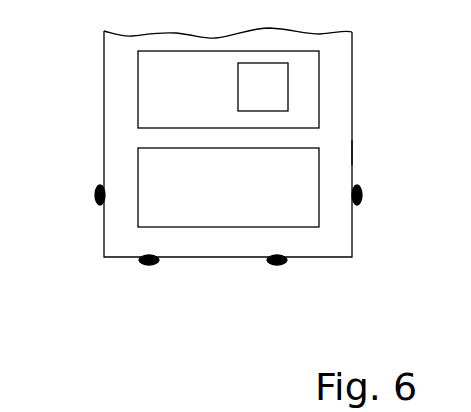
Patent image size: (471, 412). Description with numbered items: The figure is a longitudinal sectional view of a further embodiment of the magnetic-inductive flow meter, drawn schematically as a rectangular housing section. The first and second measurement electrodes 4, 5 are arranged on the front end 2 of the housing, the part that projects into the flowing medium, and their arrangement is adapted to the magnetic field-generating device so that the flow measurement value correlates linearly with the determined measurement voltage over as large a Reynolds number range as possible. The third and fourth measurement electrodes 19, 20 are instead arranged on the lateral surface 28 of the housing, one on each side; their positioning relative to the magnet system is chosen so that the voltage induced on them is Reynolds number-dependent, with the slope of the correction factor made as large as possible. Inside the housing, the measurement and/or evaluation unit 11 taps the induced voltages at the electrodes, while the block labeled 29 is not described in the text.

The front end 2 is at (337, 257).
The first galvanic measurement electrode 4 is at (150, 268).
The second galvanic measurement electrode 5 is at (277, 268).
The measurement and/or evaluation unit 11 is at (228, 89).
The third measurement electrode 19 is at (95, 197).
The fourth measurement electrode 20 is at (362, 197).
The lateral surface 28 is at (353, 152).
The energy storage 29 is at (228, 187).